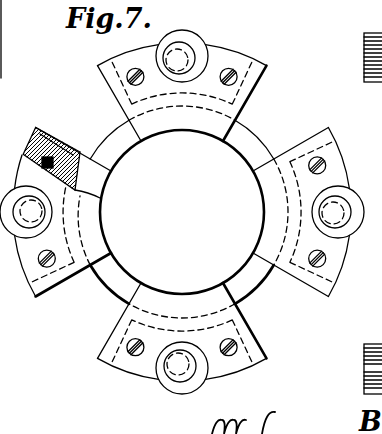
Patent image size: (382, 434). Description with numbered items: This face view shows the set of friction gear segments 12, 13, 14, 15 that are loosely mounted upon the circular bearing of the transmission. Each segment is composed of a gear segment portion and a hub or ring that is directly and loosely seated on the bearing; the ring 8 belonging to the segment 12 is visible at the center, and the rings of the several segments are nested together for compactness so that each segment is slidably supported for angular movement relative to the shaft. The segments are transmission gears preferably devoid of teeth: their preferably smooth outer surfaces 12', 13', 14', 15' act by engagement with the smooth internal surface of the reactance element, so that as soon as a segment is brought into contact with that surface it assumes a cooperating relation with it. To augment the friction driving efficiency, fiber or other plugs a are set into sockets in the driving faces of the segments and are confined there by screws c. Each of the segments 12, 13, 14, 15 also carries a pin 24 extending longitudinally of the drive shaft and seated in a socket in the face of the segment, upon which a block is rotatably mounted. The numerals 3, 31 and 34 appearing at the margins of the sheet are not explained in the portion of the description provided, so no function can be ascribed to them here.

The ring 8 is at (258, 143).
The segment 12 is at (182, 85).
The smooth surface 12' is at (254, 90).
The segment 13 is at (304, 209).
The smooth surface 13' is at (313, 221).
The segment 14 is at (240, 344).
The smooth surface 14' is at (254, 337).
The segment 15 is at (55, 212).
The smooth surface 15' is at (55, 277).
The pin 24 is at (0, 33).
The recess 3 is at (248, 107).
The plug a is at (37, 143).
The screw c is at (127, 70).
The part 31 is at (224, 3).
The part 34 is at (305, 7).